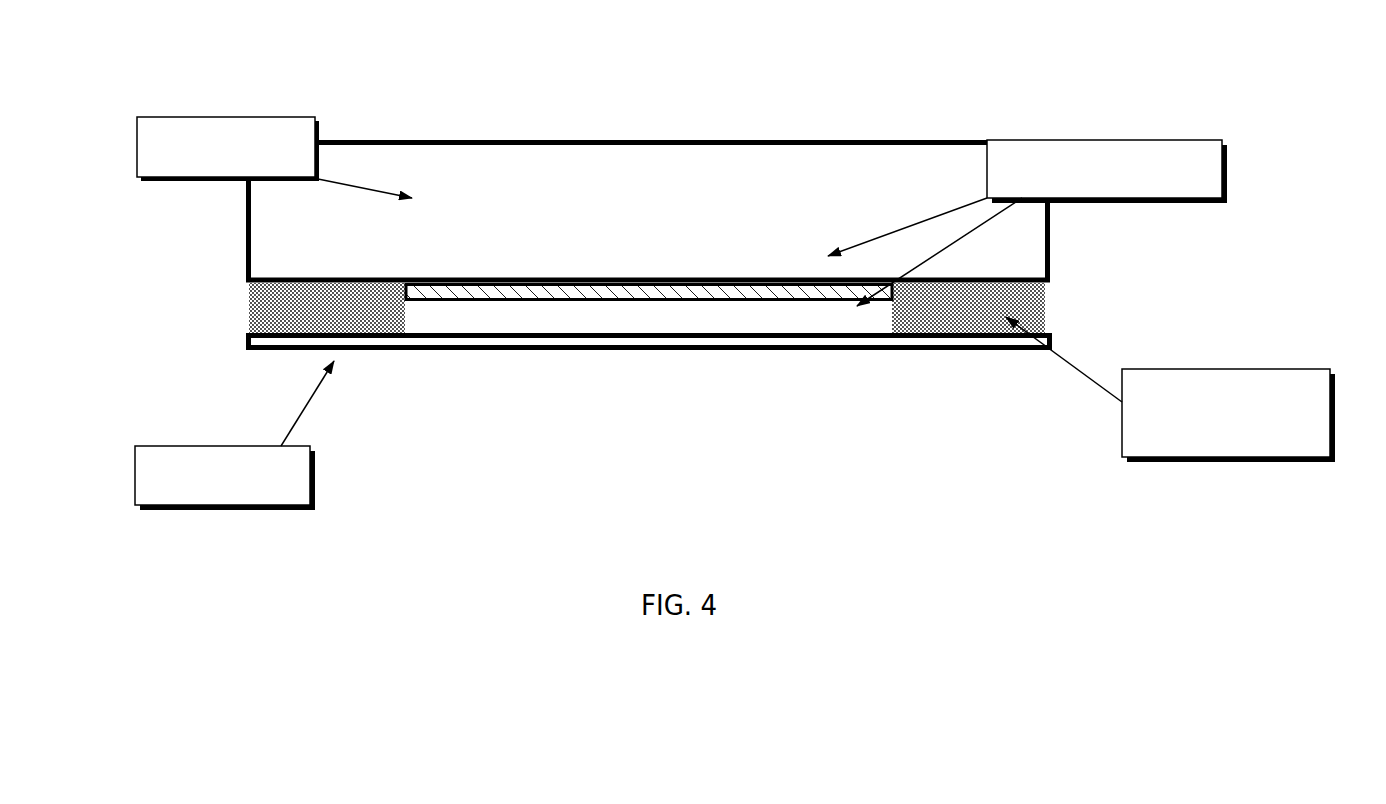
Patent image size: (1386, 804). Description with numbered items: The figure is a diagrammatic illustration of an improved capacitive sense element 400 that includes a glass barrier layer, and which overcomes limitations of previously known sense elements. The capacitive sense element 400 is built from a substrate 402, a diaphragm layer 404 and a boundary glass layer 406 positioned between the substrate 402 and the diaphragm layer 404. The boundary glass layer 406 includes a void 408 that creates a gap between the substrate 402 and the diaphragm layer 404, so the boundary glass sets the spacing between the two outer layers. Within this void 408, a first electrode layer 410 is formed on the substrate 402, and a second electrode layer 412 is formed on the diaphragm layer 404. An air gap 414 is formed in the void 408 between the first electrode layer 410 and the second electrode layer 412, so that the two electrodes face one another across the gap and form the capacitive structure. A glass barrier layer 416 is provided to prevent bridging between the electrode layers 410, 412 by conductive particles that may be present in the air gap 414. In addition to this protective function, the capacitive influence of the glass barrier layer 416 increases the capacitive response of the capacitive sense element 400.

The capacitive sense element 400 is at (1043, 48).
The substrate 402 is at (412, 150).
The diaphragm layer 404 is at (278, 350).
The boundary glass layer 406 is at (1045, 302).
The void 408 is at (598, 320).
The first electrode layer 410 is at (633, 280).
The second electrode layer 412 is at (430, 333).
The air gap 414 is at (712, 305).
The glass barrier layer 416 is at (776, 291).